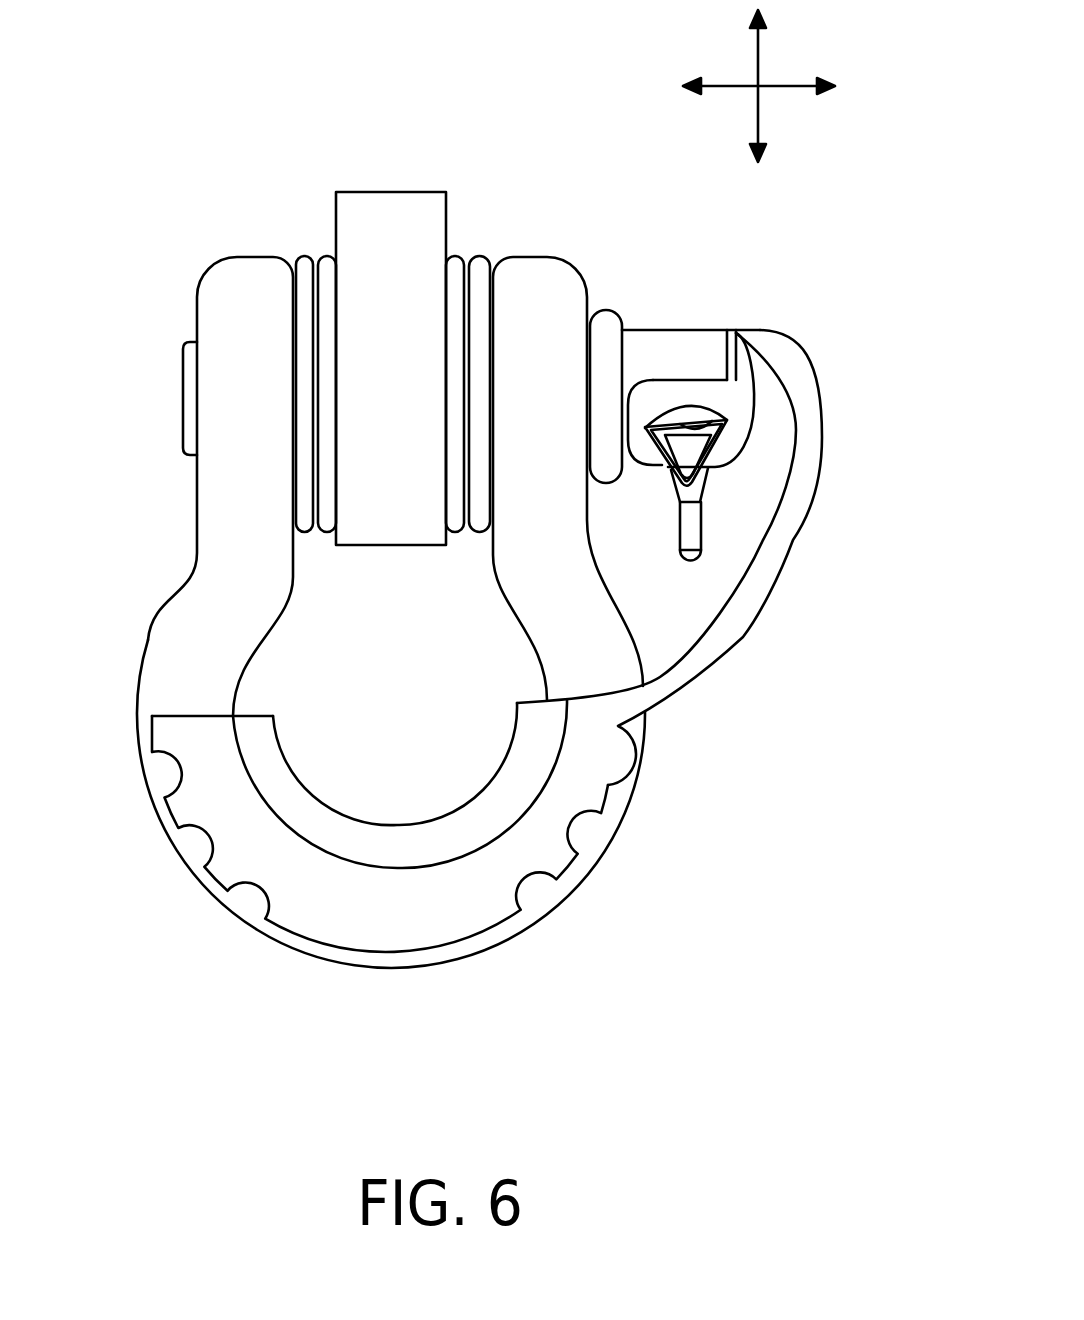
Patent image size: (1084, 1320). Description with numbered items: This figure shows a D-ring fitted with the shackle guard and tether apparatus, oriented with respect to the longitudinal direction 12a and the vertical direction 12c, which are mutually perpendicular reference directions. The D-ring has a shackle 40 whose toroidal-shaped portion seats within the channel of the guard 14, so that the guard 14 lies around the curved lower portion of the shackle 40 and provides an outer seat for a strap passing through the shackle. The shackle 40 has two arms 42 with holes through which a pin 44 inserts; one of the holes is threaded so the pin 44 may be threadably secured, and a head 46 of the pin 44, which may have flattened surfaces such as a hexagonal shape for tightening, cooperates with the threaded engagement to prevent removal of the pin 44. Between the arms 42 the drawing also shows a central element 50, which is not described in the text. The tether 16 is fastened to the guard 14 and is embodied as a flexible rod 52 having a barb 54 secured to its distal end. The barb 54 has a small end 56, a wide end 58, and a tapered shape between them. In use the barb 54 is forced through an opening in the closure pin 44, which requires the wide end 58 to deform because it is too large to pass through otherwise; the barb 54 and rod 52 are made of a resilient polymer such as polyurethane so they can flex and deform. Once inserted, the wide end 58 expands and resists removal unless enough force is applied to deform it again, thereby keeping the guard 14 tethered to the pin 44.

The longitudinal direction 12a is at (807, 88).
The vertical direction 12c is at (760, 60).
The guard 14 is at (391, 810).
The tether 16 is at (688, 557).
The shackle 40 is at (198, 567).
The arms 42 is at (262, 280).
The pin 44 is at (188, 402).
The head 46 is at (602, 328).
The pin 50 is at (387, 205).
The flexible rod 52 is at (712, 648).
The barb 54 is at (670, 470).
The small end 56 is at (687, 530).
The wide end 58 is at (718, 421).